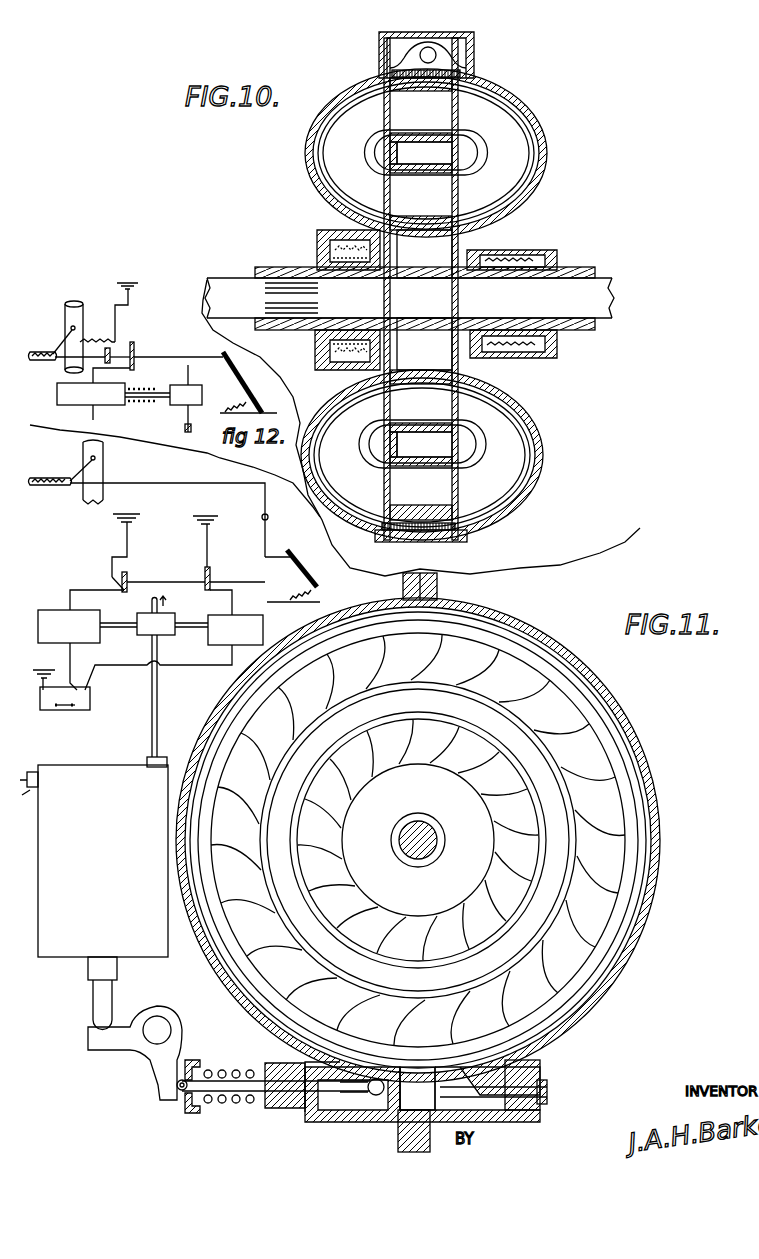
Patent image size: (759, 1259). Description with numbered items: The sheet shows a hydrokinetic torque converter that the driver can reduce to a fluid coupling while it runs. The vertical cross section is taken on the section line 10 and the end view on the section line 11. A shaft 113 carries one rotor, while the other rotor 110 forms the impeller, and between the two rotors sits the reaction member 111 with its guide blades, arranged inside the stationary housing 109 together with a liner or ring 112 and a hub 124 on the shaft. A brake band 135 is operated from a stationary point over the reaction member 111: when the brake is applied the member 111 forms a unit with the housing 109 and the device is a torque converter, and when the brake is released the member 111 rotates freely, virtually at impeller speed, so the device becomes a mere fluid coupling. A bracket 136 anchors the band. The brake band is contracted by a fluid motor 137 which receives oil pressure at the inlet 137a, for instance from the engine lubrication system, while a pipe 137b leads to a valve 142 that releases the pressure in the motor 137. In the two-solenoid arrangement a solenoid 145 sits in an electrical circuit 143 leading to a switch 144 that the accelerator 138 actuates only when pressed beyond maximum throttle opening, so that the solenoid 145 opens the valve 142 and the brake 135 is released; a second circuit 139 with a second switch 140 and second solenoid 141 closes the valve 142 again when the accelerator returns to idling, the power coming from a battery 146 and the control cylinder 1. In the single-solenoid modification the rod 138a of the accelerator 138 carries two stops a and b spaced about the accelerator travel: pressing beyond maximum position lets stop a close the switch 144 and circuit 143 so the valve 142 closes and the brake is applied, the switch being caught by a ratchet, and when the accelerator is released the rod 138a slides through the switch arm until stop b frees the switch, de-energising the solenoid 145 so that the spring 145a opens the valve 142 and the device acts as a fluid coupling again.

In FIG. 12, the controller cylinder 1 is at (86, 305).
In FIG. 11, the controller cylinder 1 is at (100, 462).
In FIG. 10, the section line 10— 10 is at (452, 586).
In FIG. 11, the section line 10— 10 is at (415, 1195).
In FIG. 10, the section line 11— 11 is at (430, 48).
In FIG. 10, the stationary housing 109 is at (522, 101).
In FIG. 11, the stationary housing 109 is at (588, 676).
In FIG. 10, the rotor 110 is at (498, 90).
In FIG. 10, the reaction member 111 is at (468, 72).
In FIG. 11, the reaction member 111 is at (592, 728).
In FIG. 10, the inner ring 112 is at (352, 92).
In FIG. 10, the shaft 113 is at (409, 298).
In FIG. 11, the shaft 113 is at (432, 835).
In FIG. 10, the hub 124 is at (425, 300).
In FIG. 10, the brake band 135 is at (445, 534).
In FIG. 11, the brake band 135 is at (583, 696).
In FIG. 10, the bracket 136 is at (433, 44).
In FIG. 11, the bracket 136 is at (366, 1095).
In FIG. 11, the fluid motor 137 is at (143, 958).
In FIG. 11, the pressure inlet 137a is at (33, 770).
In FIG. 12, the pipe 137b is at (170, 432).
In FIG. 11, the pipe 137b is at (150, 757).
In FIG. 12, the accelerator 138 is at (242, 380).
In FIG. 11, the accelerator 138 is at (305, 572).
In FIG. 12, the accelerator rod 138a is at (197, 348).
In FIG. 11, the second circuit 139 is at (208, 530).
In FIG. 11, the second switch 140 is at (212, 580).
In FIG. 11, the second solenoid 141 is at (174, 652).
In FIG. 12, the valve 142 is at (187, 398).
In FIG. 11, the valve 142 is at (163, 632).
In FIG. 12, the electrical circuit 143 is at (130, 300).
In FIG. 11, the electrical circuit 143 is at (130, 530).
In FIG. 12, the switch 144 is at (118, 342).
In FIG. 11, the switch 144 is at (105, 580).
In FIG. 12, the solenoid 145 is at (93, 394).
In FIG. 11, the solenoid 145 is at (69, 650).
In FIG. 12, the spring 145a is at (133, 387).
In FIG. 11, the battery 146 is at (90, 700).
In FIG. 12, the stop a is at (140, 353).
In FIG. 12, the stop b is at (97, 333).